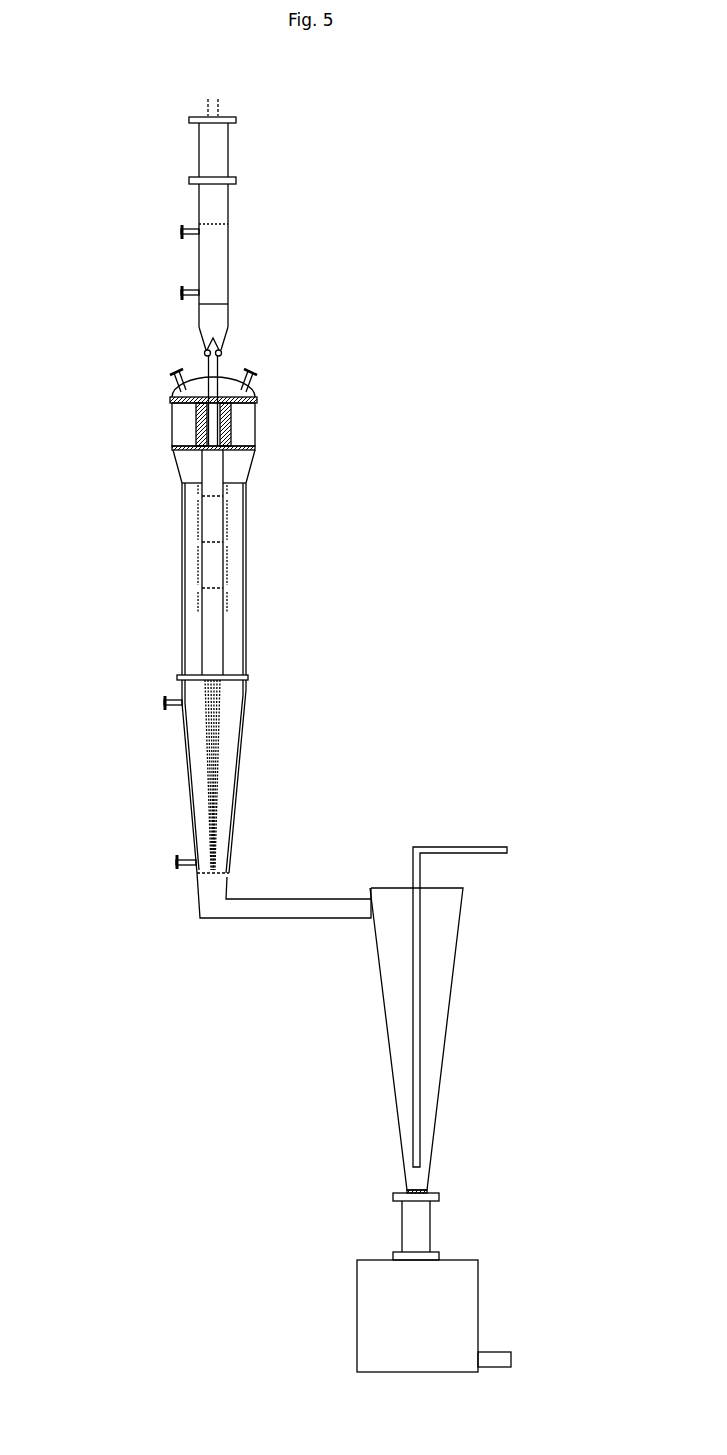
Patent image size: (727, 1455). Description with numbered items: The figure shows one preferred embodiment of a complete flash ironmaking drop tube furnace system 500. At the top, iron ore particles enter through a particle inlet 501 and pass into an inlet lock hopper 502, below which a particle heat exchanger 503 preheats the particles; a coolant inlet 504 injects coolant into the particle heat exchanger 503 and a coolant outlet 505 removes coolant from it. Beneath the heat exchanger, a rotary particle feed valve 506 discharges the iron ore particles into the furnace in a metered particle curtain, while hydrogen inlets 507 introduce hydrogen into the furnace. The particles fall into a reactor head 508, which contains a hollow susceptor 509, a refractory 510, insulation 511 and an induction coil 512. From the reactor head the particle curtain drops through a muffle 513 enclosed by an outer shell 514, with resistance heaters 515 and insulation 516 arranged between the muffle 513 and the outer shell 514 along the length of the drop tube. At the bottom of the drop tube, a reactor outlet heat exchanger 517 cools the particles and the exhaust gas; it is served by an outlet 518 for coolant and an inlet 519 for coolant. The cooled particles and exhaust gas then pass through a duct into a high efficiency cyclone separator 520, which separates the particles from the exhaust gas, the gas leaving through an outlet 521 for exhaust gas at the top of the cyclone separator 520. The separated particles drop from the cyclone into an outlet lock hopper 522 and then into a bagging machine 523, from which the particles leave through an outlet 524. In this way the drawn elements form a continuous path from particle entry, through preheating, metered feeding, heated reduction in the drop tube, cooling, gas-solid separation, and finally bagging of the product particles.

The flash ironmaking drop tube furnace system 500 is at (468, 373).
The particle inlet 501 is at (216, 94).
The inlet lock hopper 502 is at (218, 160).
The particle heat exchanger 503 is at (218, 262).
The coolant inlet 504 is at (181, 293).
The coolant outlet 505 is at (181, 232).
The rotary particle feed valve 506 is at (205, 349).
The hydrogen inlet 507 is at (181, 367).
The reactor head 508 is at (257, 392).
The hollow susceptor 509 is at (196, 410).
The refractory 510 is at (228, 412).
The insulation 511 is at (200, 437).
The induction coil 512 is at (231, 438).
The muffle 513 is at (201, 497).
The outer shell 514 is at (246, 532).
The resistance heaters 515 is at (199, 554).
The insulation 516 is at (238, 578).
The reactor outlet heat exchanger 517 is at (225, 686).
The outlet for coolant 518 is at (164, 702).
The inlet for coolant 519 is at (176, 862).
The high efficiency cyclone separator 520 is at (445, 952).
The outlet for exhaust gas 521 is at (507, 850).
The outlet lock hopper 522 is at (432, 1215).
The bagging machine 523 is at (462, 1312).
The outlet for particles 524 is at (511, 1360).